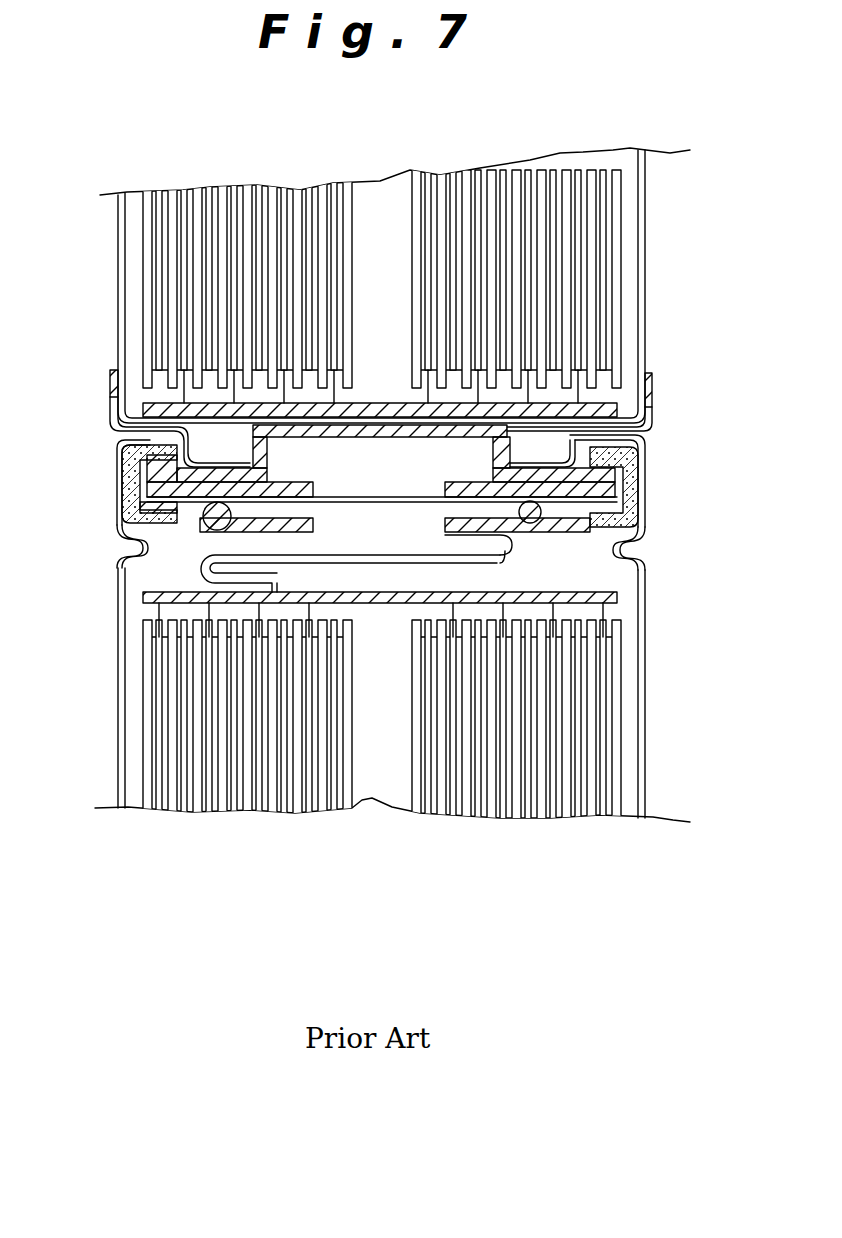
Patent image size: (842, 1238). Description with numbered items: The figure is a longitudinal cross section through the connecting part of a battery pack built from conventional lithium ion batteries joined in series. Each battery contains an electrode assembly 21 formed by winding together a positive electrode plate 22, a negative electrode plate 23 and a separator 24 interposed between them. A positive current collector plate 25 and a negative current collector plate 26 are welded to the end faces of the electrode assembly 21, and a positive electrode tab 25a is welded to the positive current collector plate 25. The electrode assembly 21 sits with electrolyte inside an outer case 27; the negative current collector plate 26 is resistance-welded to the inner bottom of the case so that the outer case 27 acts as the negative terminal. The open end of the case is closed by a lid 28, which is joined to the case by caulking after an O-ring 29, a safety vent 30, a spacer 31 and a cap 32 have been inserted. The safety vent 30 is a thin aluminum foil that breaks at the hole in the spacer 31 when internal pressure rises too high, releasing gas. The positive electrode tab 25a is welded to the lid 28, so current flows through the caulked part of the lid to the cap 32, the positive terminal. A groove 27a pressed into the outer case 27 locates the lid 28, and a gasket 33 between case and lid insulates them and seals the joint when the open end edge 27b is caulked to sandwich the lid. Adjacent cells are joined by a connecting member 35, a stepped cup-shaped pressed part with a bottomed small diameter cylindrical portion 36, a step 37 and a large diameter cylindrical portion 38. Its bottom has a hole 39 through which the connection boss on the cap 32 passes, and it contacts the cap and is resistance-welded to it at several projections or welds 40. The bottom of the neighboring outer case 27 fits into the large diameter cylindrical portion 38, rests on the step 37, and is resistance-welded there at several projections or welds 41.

The electrode assembly 21 is at (620, 243).
The positive electrode plate 22 is at (603, 277).
The negative electrode plate 23 is at (592, 180).
The separator 24 is at (617, 225).
The positive current collector plate 25 is at (617, 580).
The positive electrode tab 25a is at (210, 573).
The negative current collector plate 26 is at (613, 387).
The outer case 27 is at (117, 256).
The groove 27a is at (117, 555).
The open end edge 27b is at (117, 430).
The lid 28 is at (120, 532).
The O-ring 29 is at (643, 530).
The safety vent 30 is at (378, 500).
The spacer 31 is at (155, 488).
The cap 32 is at (123, 448).
The gasket 33 is at (125, 502).
The connecting member 35 is at (658, 422).
The small diameter cylindrical portion 36 is at (643, 467).
The step 37 is at (637, 438).
The large diameter cylindrical portion 38 is at (654, 402).
The hole 39 is at (500, 462).
The projections or welds 40 is at (255, 452).
The projections or welds 41 is at (110, 390).